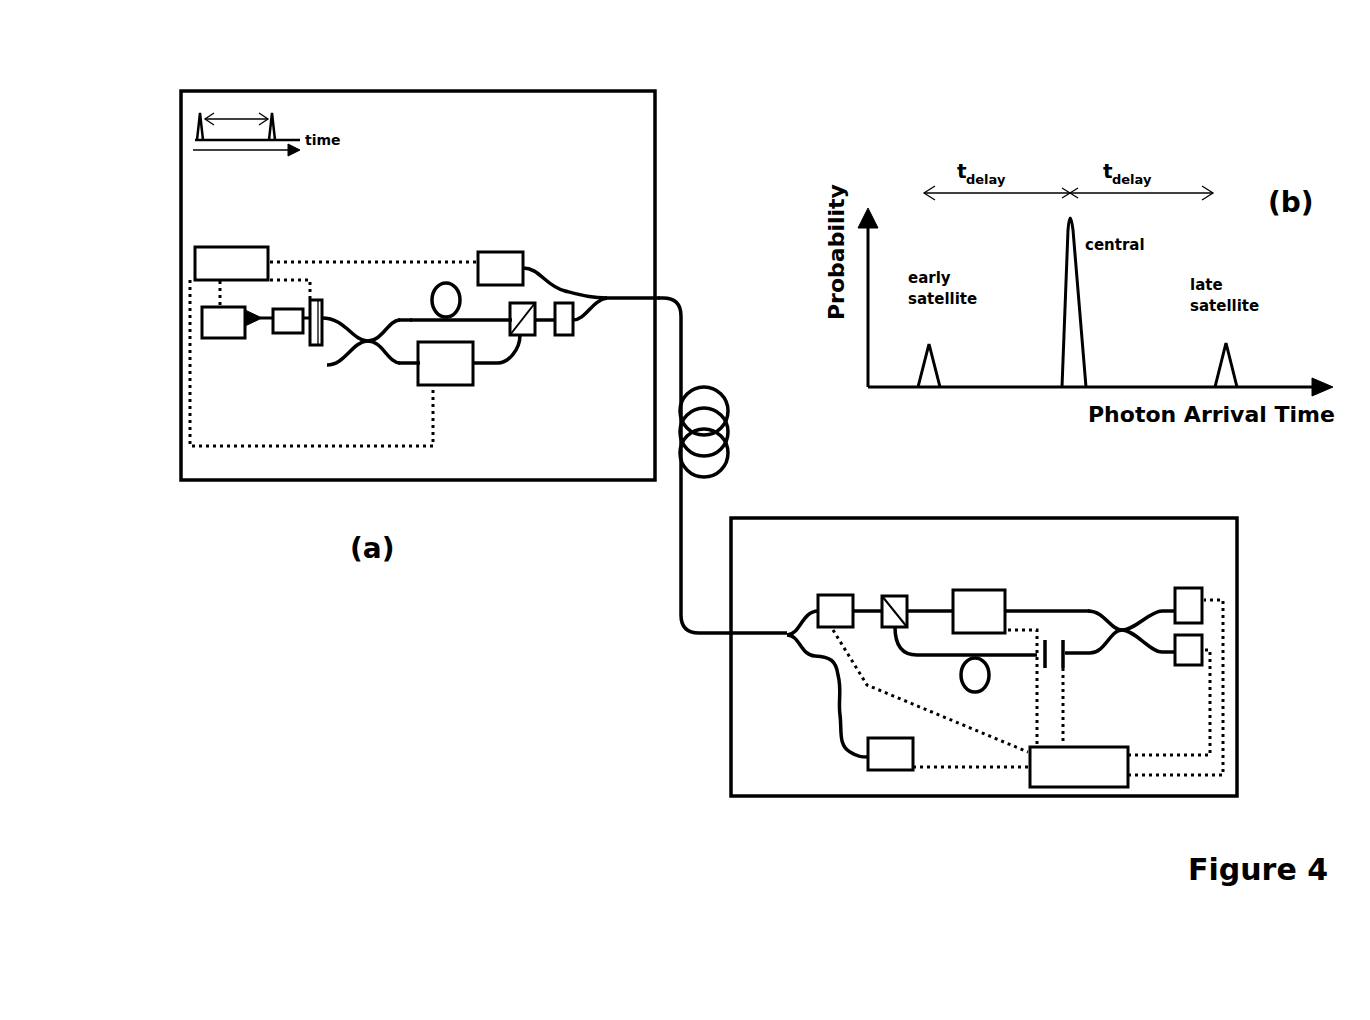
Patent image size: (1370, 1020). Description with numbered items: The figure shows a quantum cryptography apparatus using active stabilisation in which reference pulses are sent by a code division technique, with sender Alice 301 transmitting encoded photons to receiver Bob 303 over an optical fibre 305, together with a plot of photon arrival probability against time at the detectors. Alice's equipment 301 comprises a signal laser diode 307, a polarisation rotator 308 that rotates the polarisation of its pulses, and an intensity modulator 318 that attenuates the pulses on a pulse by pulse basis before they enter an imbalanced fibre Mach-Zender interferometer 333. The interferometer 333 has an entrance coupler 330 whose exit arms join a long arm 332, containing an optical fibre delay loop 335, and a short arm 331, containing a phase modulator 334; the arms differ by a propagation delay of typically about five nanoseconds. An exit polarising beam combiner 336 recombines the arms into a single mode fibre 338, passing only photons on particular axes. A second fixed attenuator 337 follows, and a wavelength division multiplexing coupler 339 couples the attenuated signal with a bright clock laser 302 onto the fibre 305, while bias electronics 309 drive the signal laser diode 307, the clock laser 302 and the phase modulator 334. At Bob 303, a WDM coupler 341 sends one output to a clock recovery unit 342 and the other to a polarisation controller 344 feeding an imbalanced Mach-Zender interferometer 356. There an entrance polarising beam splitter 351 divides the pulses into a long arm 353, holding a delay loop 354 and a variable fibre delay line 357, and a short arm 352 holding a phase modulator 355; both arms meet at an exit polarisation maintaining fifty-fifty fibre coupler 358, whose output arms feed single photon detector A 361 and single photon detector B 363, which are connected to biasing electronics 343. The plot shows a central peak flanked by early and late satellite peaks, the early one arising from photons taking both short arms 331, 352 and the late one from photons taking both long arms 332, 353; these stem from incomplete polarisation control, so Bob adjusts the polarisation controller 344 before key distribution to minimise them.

The sender Alice equipment 301 is at (493, 482).
The bright clock laser 302 is at (498, 251).
The receiver Bob equipment 303 is at (729, 710).
The optical fibre 305 is at (678, 512).
The signal laser diode 307 is at (223, 340).
The polarisation rotator 308 is at (280, 338).
The bias electronics 309 is at (268, 251).
The intensity modulator 318 is at (310, 345).
The entrance coupler 330 is at (367, 350).
The short arm 331 is at (390, 363).
The long arm 332 is at (390, 320).
The imbalanced fibre Mach-Zender interferometer 333 is at (412, 318).
The phase modulator 334 is at (473, 372).
The optical fibre delay loop 335 is at (444, 282).
The exit polarising beam combiner 336 is at (535, 333).
The second fixed attenuator 337 is at (573, 322).
The single mode fibre 338 is at (540, 321).
The wavelength division multiplexing coupler 339 is at (597, 296).
The WDM coupler 341 is at (782, 630).
The clock recovery unit 342 is at (890, 738).
The biasing electronics 343 is at (1128, 720).
The polarisation controller 344 is at (840, 595).
The entrance polarising beam splitter 351 is at (895, 597).
The short arm 352 is at (920, 610).
The long arm 353 is at (935, 655).
The optical fibre delay loop 354 is at (988, 688).
The phase modulator 355 is at (1010, 553).
The imbalanced Mach-Zender interferometer 356 is at (1055, 610).
The variable fibre delay line 357 is at (1065, 667).
The exit polarisation maintaining 50/50 fibre coupler 358 is at (1122, 628).
The single photon detector A 361 is at (1183, 588).
The single photon detector B 363 is at (1188, 665).